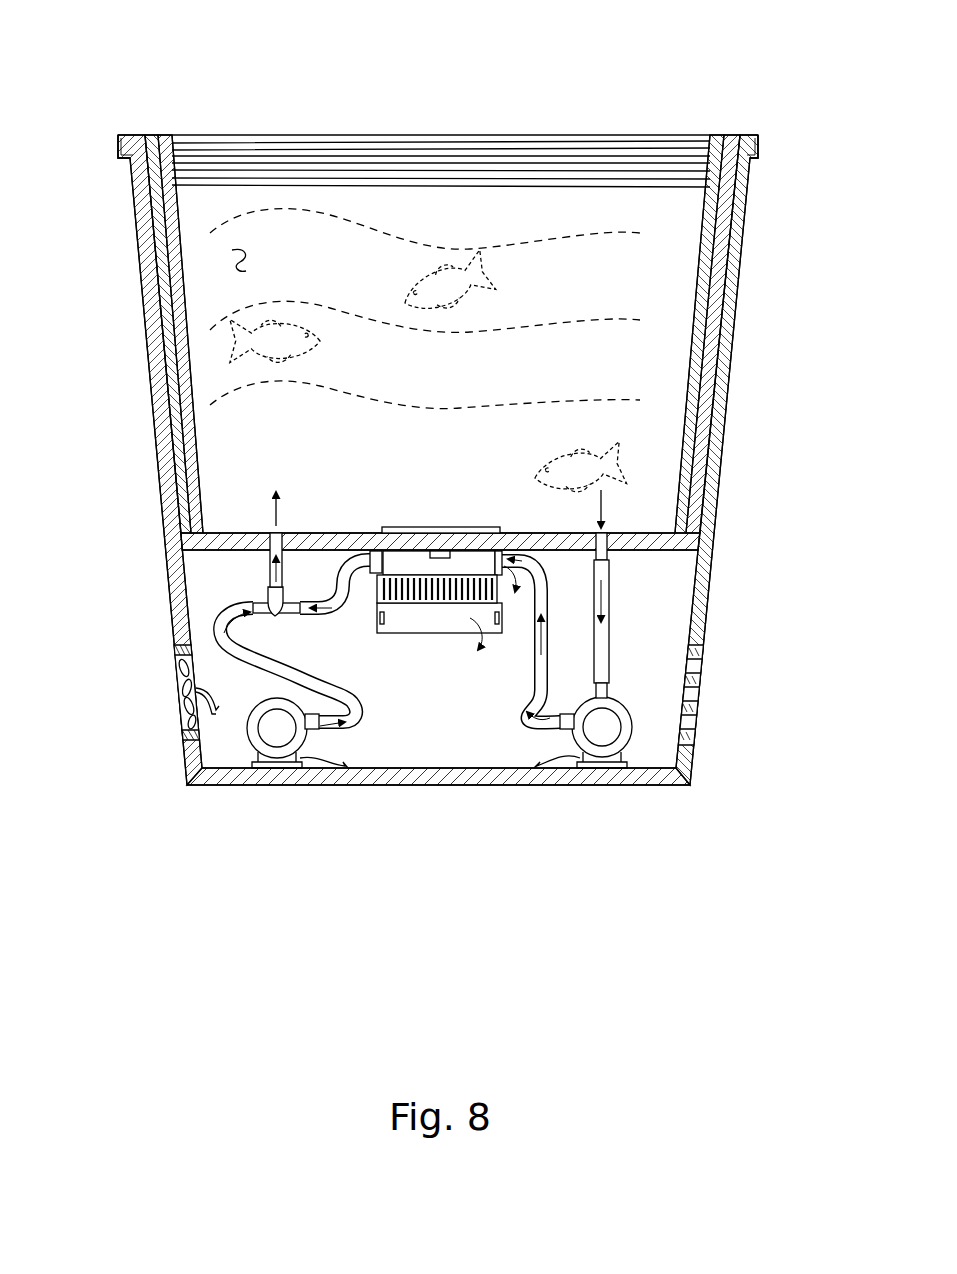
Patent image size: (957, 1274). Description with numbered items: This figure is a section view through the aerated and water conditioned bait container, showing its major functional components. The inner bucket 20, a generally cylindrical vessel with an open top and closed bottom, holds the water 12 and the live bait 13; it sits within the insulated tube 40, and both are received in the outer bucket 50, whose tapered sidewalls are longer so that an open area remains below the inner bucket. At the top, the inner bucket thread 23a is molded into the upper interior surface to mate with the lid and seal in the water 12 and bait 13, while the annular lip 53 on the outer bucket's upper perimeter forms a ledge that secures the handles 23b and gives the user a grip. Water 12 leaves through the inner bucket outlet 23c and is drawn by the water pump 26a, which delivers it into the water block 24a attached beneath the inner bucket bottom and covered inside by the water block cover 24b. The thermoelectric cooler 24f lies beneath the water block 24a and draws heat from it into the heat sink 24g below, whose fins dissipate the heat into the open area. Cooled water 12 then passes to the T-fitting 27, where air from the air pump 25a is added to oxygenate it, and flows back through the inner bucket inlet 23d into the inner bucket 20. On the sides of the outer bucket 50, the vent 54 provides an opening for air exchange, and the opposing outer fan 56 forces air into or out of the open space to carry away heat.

The water 12 is at (232, 257).
The live bait 13 is at (435, 270).
The inner bucket 20 is at (713, 195).
The insulated tube 40 is at (718, 283).
The outer bucket 50 is at (730, 318).
The inner bucket thread 23a is at (198, 163).
The handles 23b is at (120, 133).
The annular lip 53 is at (119, 150).
The vent 54 is at (700, 693).
The outer fan 56 is at (186, 690).
The inner bucket outlet 23c is at (608, 557).
The inner bucket inlet 23d is at (270, 565).
The T-fitting 27 is at (280, 607).
The water block 24a is at (416, 560).
The water block cover 24b is at (455, 530).
The thermoelectric cooler 24f is at (393, 578).
The heat sink 24g is at (386, 598).
The air pump 25a is at (272, 740).
The water pump 26a is at (607, 745).